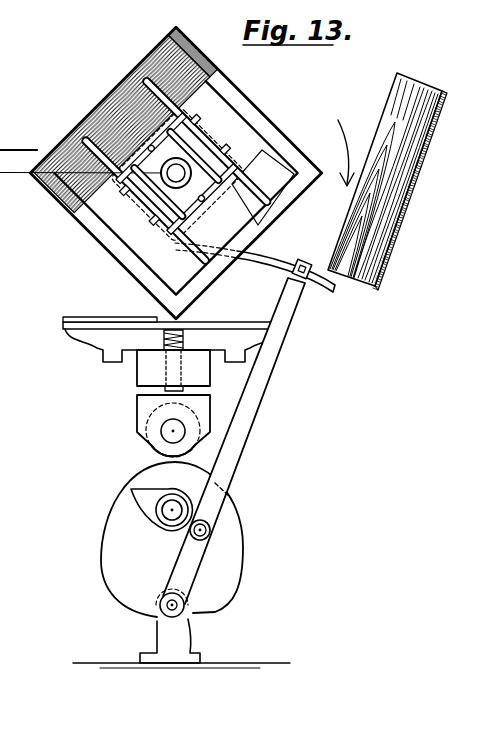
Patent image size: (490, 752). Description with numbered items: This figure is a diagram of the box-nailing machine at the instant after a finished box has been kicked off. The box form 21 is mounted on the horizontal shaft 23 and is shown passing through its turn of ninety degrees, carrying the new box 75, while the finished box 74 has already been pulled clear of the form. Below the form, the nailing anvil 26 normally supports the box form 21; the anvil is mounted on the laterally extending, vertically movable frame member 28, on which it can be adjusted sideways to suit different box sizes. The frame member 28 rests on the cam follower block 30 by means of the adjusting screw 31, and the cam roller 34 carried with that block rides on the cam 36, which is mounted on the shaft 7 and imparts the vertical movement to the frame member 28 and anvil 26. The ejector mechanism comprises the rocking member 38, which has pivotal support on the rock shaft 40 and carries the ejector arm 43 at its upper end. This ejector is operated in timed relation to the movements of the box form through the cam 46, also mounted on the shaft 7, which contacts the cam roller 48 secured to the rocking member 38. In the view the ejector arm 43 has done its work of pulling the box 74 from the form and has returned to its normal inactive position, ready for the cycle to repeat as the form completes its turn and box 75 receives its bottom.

The shaft 7 is at (170, 512).
The box form 21 is at (122, 254).
The horizontal shaft 23 is at (177, 172).
The nailing anvil 26 is at (118, 343).
The frame member 28 is at (152, 377).
The cam follower block 30 is at (147, 417).
The adjusting screw 31 is at (170, 340).
The cam roller 34 is at (157, 450).
The cam 36 is at (117, 562).
The rocking member 38 is at (227, 460).
The rock shaft 40 is at (185, 606).
The ejector arm 43 is at (330, 292).
The cam 46 is at (150, 495).
The cam roller 48 is at (213, 530).
The finished box 74 is at (398, 174).
The new box 75 is at (128, 93).